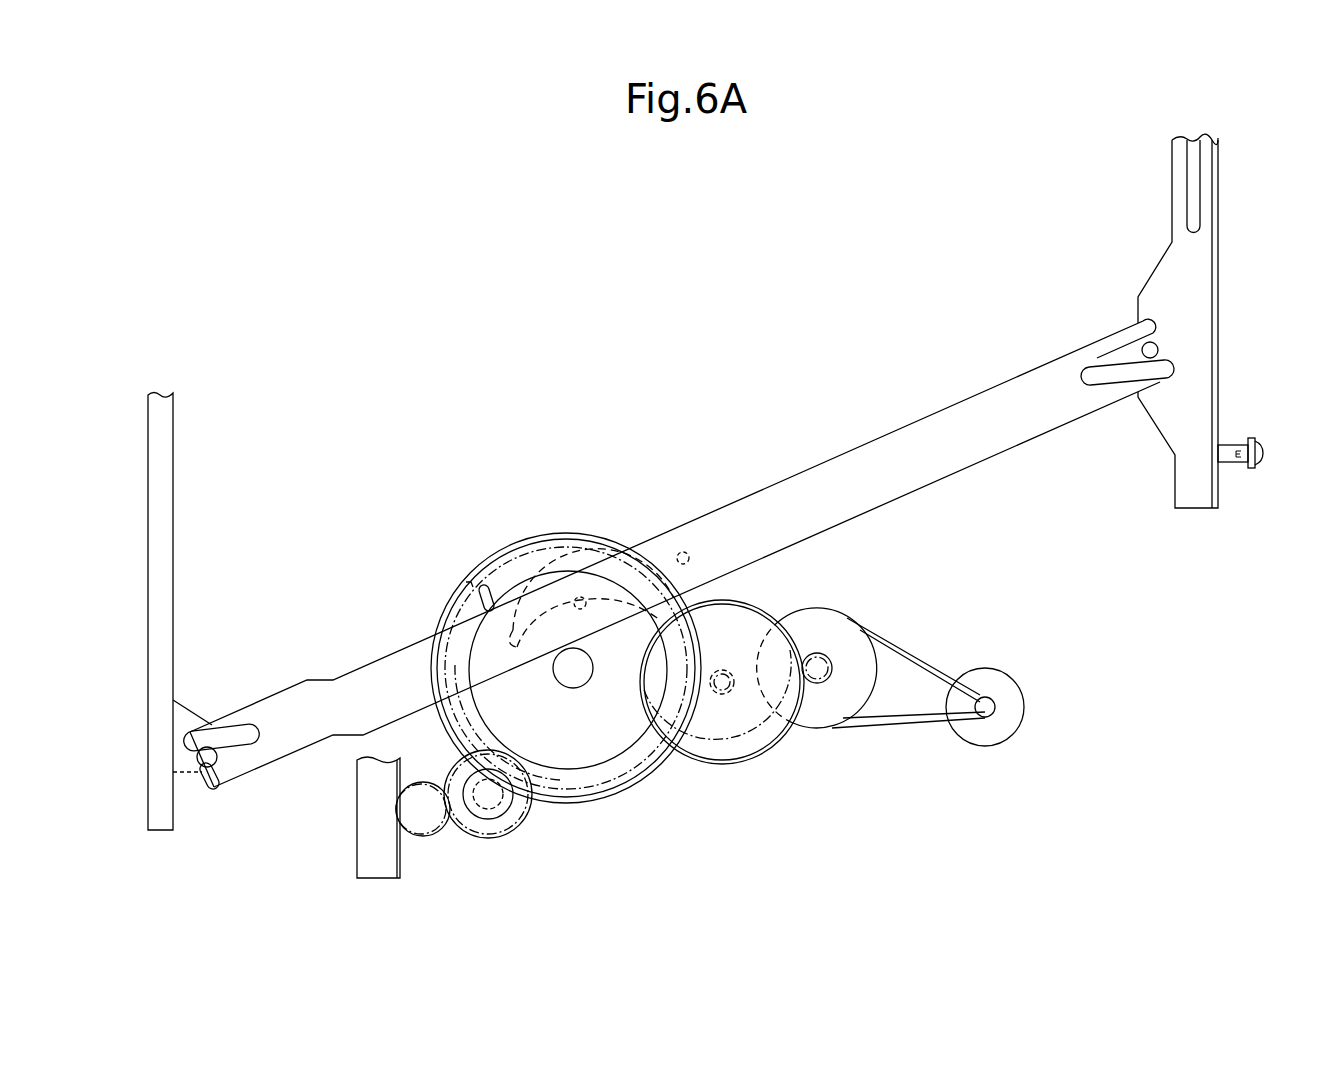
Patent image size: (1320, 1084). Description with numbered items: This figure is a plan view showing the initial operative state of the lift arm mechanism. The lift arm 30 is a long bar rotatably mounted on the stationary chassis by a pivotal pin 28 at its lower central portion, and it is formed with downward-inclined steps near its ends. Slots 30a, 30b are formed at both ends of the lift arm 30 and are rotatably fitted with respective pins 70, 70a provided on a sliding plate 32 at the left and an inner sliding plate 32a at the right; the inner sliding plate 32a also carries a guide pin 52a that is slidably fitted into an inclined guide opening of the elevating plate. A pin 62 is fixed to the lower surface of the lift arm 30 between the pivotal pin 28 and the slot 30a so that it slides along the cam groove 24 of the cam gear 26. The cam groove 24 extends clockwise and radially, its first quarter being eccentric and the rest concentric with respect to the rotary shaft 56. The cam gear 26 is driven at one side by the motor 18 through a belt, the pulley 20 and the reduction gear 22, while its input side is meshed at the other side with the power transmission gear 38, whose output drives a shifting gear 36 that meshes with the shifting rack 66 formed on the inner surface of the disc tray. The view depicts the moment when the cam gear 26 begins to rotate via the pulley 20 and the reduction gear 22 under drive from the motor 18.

The motor 18 is at (992, 735).
The pulley 20 is at (822, 707).
The reduction gear 22 is at (737, 733).
The cam groove 24 is at (475, 607).
The cam gear 26 is at (533, 573).
The pivotal pin 28 is at (683, 552).
The lift arm 30 is at (833, 480).
The slot 30a is at (237, 740).
The slot 30b is at (1105, 370).
The sliding plate 32 is at (156, 486).
The inner sliding plate 32a is at (1173, 287).
The shifting gear 36 is at (427, 822).
The power transmission gear 38 is at (512, 818).
The guide pin 52a is at (1237, 460).
The rotary shaft 56 is at (580, 677).
The pin 62 is at (583, 600).
The shifting rack 66 is at (377, 868).
The pin 70 is at (208, 790).
The pin 70a is at (1157, 345).